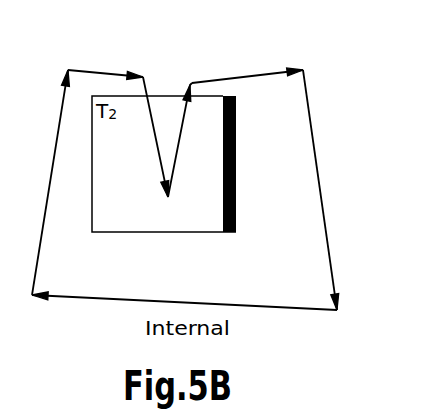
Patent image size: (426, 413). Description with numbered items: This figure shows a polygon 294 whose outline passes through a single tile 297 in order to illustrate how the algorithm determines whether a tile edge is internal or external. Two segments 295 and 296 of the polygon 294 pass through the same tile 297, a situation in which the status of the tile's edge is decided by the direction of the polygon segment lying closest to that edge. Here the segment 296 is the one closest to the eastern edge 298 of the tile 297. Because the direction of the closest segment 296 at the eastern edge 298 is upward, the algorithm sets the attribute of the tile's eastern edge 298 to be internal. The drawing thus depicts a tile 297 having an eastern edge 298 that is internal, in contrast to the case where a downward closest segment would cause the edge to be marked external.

The polygon 294 is at (297, 245).
The segment 295 is at (148, 117).
The segment 296 is at (182, 137).
The tile 297 is at (195, 200).
The eastern edge 298 is at (238, 147).